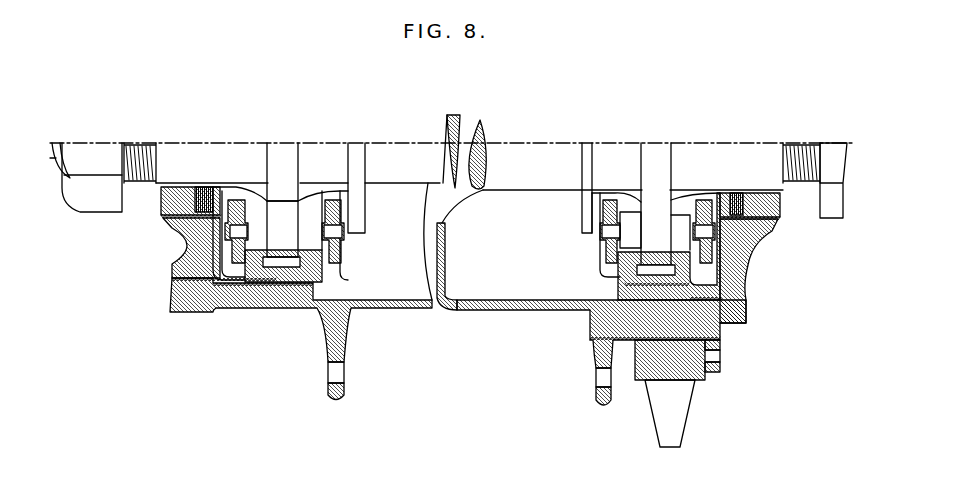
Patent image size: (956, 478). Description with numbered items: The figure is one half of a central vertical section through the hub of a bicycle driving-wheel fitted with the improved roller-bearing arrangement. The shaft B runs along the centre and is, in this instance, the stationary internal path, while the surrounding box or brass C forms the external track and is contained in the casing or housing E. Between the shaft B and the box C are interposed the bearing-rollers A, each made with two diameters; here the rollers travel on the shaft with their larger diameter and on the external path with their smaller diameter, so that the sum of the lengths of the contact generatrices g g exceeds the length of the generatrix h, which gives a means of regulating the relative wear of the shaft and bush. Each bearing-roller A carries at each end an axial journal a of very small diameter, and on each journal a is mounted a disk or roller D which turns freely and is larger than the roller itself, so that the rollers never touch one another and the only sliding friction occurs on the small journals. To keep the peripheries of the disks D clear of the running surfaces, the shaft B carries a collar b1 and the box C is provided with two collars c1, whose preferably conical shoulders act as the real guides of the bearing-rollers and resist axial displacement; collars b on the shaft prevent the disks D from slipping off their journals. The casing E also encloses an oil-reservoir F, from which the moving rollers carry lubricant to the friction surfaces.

The shaft B is at (485, 169).
The collar of the shaft b1 is at (282, 172).
The generatrix h is at (300, 217).
The generatrices g is at (284, 231).
The collars on the shaft b is at (370, 221).
The oil-reservoir F is at (446, 243).
The casing or housing E is at (514, 312).
The disk or roller D is at (599, 249).
The collars of the bearing c1 is at (618, 262).
The axial journal a is at (620, 229).
The bearing-roller A is at (665, 204).
The box or brass C is at (624, 284).